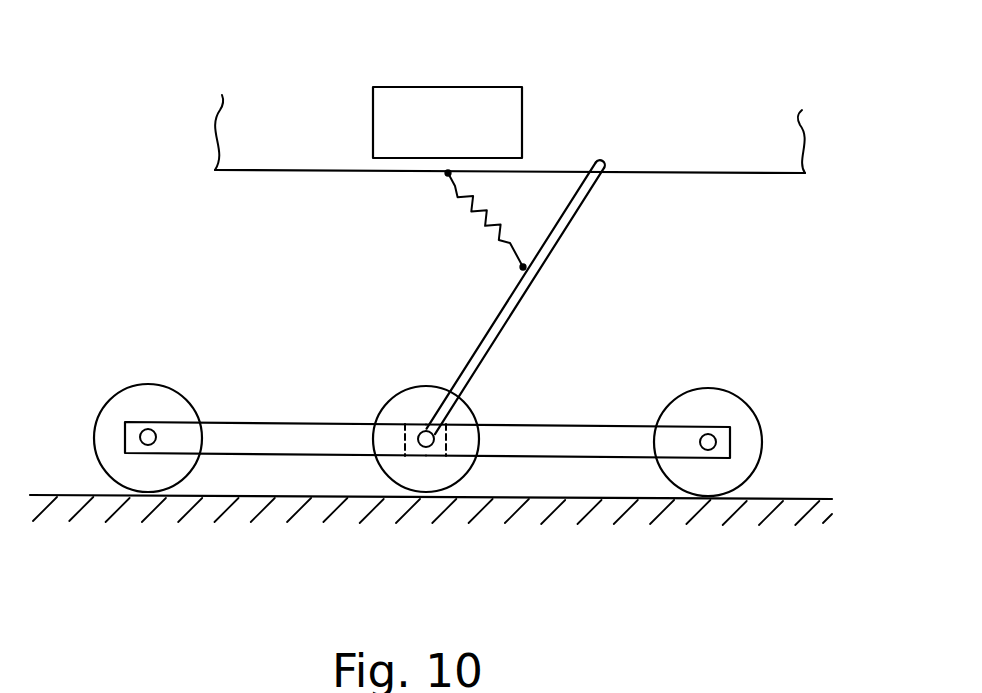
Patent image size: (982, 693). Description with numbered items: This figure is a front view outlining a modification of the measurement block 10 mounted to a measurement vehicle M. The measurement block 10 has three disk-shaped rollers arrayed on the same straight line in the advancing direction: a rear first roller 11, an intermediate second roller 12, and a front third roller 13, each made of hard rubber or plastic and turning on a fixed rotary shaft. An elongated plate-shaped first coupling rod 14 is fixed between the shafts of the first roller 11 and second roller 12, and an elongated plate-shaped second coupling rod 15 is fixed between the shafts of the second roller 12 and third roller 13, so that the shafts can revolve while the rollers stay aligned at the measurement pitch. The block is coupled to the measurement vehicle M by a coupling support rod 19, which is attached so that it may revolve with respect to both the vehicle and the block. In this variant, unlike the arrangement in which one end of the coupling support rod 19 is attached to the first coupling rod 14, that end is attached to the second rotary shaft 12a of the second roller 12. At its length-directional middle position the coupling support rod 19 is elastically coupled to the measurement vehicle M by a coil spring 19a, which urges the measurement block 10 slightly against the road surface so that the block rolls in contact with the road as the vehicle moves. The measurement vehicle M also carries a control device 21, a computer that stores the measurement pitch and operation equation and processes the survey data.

The measurement block 10 is at (509, 392).
The first roller 11 is at (142, 382).
The second roller 12 is at (410, 388).
The second rotary shaft 12a is at (426, 456).
The third roller 13 is at (700, 388).
The first coupling rod 14 is at (280, 454).
The second coupling rod 15 is at (588, 458).
The coupling support rod 19 is at (513, 317).
The coil spring 19a is at (470, 210).
The control device 21 is at (467, 87).
The measurement vehicle M is at (761, 175).